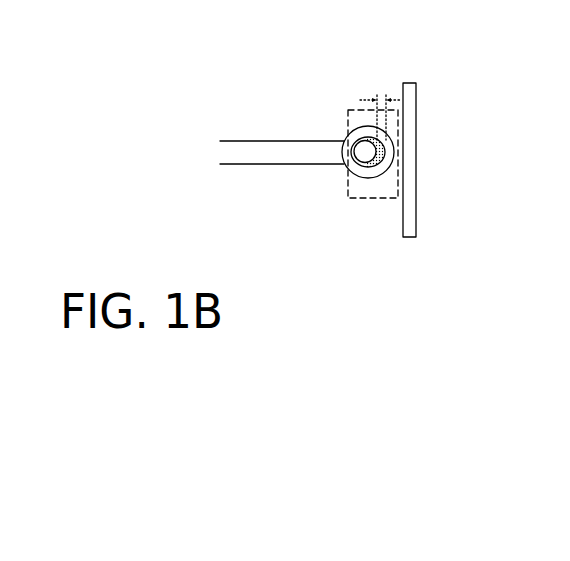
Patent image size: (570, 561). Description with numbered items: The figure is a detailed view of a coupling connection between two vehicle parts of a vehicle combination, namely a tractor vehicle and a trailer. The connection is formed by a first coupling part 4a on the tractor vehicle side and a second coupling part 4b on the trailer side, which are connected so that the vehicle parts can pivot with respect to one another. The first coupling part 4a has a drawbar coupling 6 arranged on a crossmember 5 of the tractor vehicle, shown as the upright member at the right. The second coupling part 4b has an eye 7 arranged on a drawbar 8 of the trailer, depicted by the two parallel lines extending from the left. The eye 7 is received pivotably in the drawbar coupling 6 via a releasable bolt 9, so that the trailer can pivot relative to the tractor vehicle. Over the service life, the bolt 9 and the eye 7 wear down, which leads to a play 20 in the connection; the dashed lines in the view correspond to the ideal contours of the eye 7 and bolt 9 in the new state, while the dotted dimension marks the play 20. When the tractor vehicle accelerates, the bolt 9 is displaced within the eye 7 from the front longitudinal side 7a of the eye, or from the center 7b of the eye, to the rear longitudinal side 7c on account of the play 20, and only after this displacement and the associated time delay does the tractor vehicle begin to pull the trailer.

The first coupling part 4a is at (426, 163).
The second coupling part 4b is at (282, 122).
The crossmember 5 is at (410, 199).
The drawbar coupling 6 is at (397, 123).
The eye 7 is at (358, 172).
The front longitudinal side of the eye 7a is at (400, 152).
The center of the eye 7b is at (373, 176).
The rear longitudinal side of the eye 7c is at (346, 153).
The drawbar 8 is at (230, 153).
The releasable bolt 9 is at (366, 157).
The play 20 is at (380, 88).